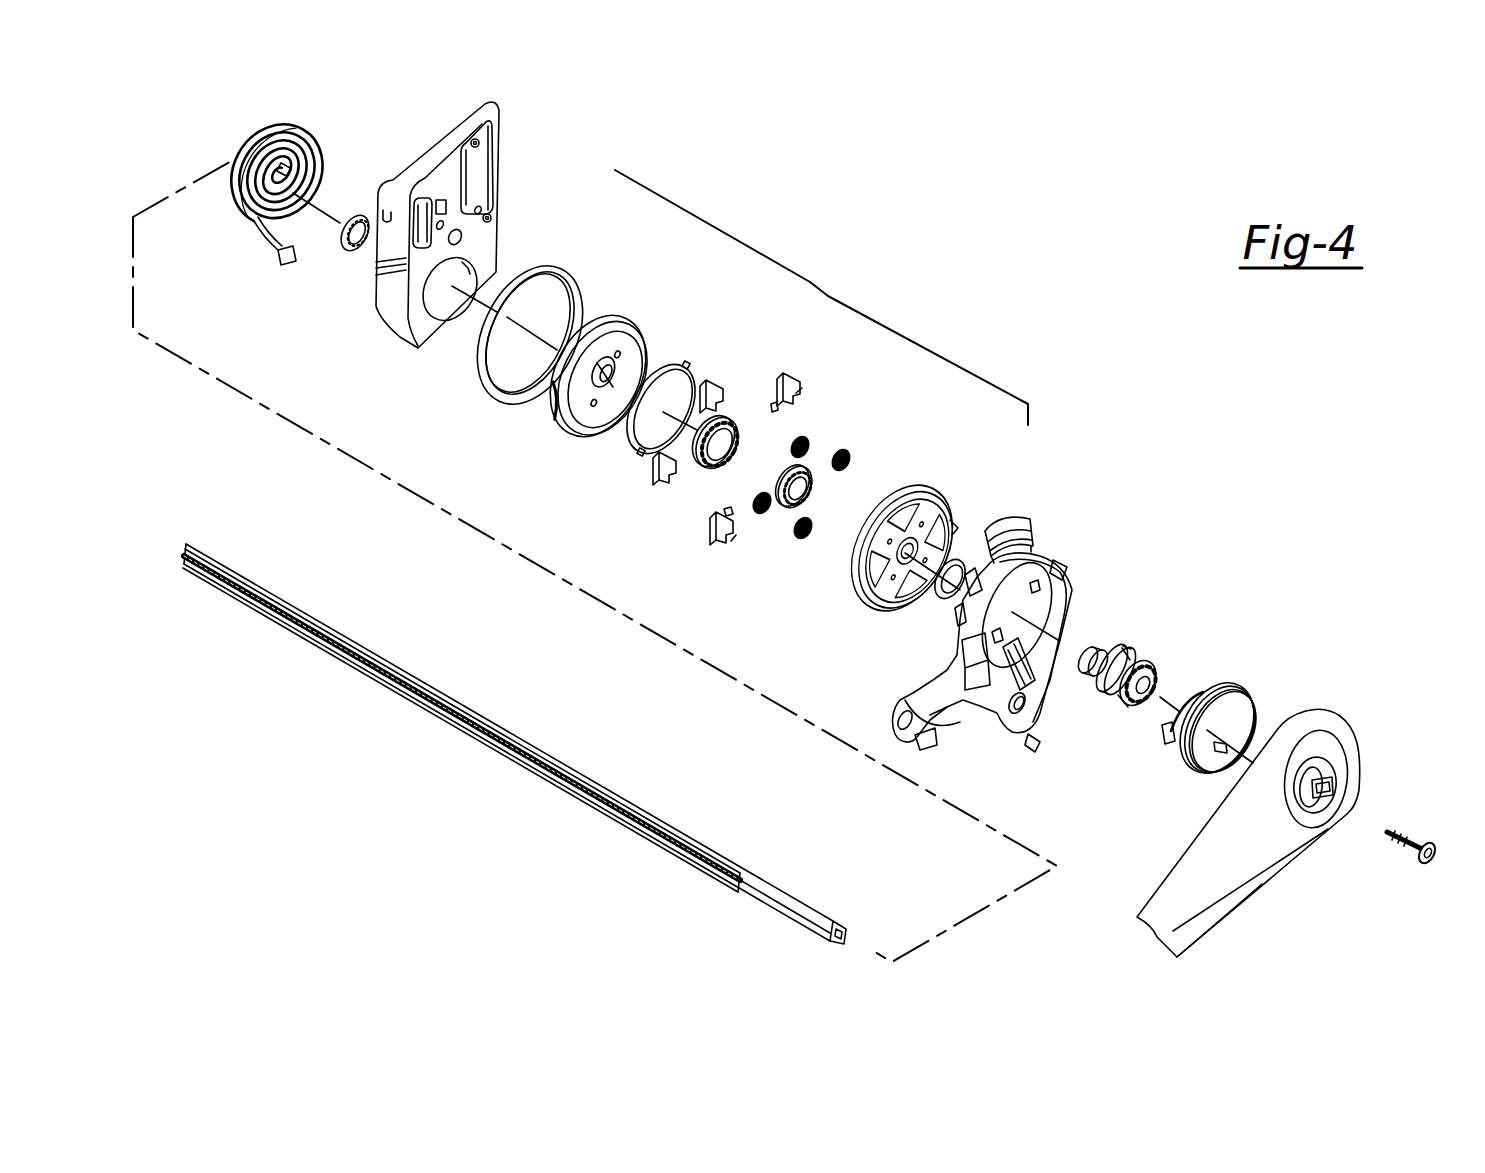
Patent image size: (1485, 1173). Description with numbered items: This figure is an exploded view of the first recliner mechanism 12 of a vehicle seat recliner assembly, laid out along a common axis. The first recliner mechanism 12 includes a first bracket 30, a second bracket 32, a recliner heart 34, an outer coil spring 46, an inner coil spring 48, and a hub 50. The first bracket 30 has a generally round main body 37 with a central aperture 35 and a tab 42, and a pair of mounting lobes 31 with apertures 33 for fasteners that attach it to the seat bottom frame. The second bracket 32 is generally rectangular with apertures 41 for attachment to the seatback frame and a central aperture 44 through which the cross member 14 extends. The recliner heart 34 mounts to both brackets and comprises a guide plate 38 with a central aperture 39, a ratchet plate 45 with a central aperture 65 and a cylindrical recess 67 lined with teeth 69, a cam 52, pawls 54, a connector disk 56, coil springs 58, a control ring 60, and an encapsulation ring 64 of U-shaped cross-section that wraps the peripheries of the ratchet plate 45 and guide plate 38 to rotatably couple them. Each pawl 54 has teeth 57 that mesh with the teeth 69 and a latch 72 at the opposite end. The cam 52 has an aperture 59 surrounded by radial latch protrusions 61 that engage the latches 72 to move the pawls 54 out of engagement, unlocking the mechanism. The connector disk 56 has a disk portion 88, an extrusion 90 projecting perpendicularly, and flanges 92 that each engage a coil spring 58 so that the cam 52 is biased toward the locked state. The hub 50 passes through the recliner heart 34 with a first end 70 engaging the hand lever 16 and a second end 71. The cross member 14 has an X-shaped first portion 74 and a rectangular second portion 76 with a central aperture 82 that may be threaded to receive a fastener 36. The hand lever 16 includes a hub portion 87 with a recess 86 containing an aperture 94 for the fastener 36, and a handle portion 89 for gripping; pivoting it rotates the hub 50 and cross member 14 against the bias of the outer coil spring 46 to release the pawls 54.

The first recliner mechanism 12 is at (622, 663).
The cross member 14 is at (538, 765).
The hand lever 16 is at (1273, 785).
The first bracket 30 is at (1019, 643).
The mounting lobes 31 is at (925, 749).
The second bracket 32 is at (474, 221).
The apertures 33 is at (1028, 706).
The recliner heart 34 is at (821, 297).
The central aperture 35 is at (1018, 521).
The fastener 36 is at (1411, 836).
The main body 37 is at (1073, 606).
The guide plate 38 is at (880, 615).
The central aperture 39 is at (953, 517).
The apertures 41 is at (490, 218).
The tab 42 is at (993, 712).
The central aperture 44 is at (455, 283).
The ratchet plate 45 is at (581, 364).
The outer coil spring 46 is at (1220, 688).
The inner coil spring 48 is at (274, 132).
The hub 50 is at (1134, 689).
The cam 52 is at (734, 435).
The pawls 54 is at (718, 374).
The connector disk 56 is at (812, 466).
The teeth 57 is at (801, 392).
The coil springs 58 is at (808, 447).
The aperture 59 is at (738, 423).
The control ring 60 is at (680, 360).
The latch protrusions 61 is at (730, 427).
The encapsulation ring 64 is at (485, 346).
The central aperture 65 is at (608, 370).
The cylindrical recess 67 is at (573, 425).
The teeth 69 is at (631, 333).
The first end 70 is at (1150, 662).
The second end 71 is at (1088, 646).
The latch 72 is at (776, 406).
The first portion 74 is at (375, 650).
The second portion 76 is at (805, 896).
The central aperture 82 is at (845, 938).
The recess 86 is at (1303, 806).
The hub portion 87 is at (1302, 722).
The disk portion 88 is at (822, 480).
The handle portion 89 is at (1191, 929).
The extrusion 90 is at (793, 462).
The flanges 92 is at (851, 459).
The aperture 94 is at (1320, 784).